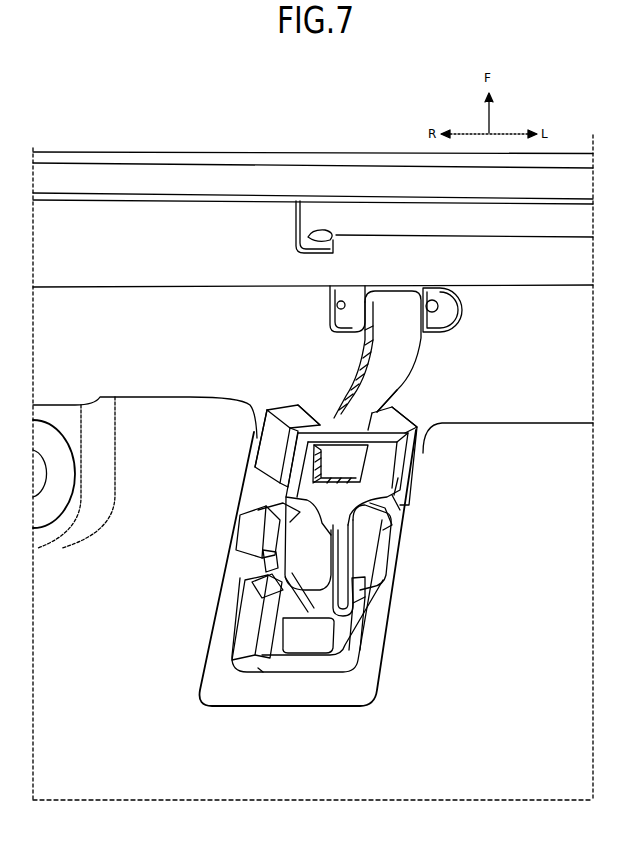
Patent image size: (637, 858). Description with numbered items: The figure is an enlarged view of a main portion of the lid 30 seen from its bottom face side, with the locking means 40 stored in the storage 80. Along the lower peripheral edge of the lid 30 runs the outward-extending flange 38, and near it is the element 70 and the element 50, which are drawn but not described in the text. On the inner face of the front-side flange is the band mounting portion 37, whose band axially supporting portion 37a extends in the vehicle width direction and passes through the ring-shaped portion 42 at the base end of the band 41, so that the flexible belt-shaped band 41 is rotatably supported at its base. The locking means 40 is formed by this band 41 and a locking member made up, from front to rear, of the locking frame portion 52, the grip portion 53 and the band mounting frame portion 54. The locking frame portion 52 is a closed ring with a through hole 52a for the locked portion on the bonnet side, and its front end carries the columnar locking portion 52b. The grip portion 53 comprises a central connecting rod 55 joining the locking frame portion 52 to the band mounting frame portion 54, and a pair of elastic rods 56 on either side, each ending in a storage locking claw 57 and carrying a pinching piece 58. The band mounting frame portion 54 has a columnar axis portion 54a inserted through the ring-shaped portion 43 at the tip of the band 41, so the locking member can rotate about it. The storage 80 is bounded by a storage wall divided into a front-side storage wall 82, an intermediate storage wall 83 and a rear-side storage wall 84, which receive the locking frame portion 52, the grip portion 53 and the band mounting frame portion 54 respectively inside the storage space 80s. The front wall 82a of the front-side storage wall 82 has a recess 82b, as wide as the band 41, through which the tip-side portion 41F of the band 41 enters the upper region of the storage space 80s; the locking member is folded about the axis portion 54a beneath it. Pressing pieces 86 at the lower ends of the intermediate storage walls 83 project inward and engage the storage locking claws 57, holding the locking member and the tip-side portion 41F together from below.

The lid 30 is at (351, 130).
The flange 38 is at (316, 151).
The clip 70 is at (173, 201).
The band mounting portion 37 is at (383, 284).
The band axially supporting portion 37a is at (433, 293).
The ring-shaped portion 42 is at (395, 283).
The band 41 is at (412, 360).
The tip-side portion of the band 41F is at (405, 487).
The locking means 40 is at (438, 389).
The grip portion 53 is at (420, 561).
The latch plate 50 is at (307, 596).
The band mounting frame portion 54 is at (347, 640).
The axis portion 54a is at (292, 672).
The ring-shaped portion 43 is at (312, 648).
The locking frame portion 52 is at (408, 452).
The through hole 52a is at (358, 445).
The locking portion 52b is at (350, 458).
The storage 80 is at (412, 468).
The storage space 80s is at (410, 497).
The front-side storage wall 82 is at (258, 443).
The front wall 82a is at (272, 405).
The recess 82b is at (310, 404).
The intermediate storage wall 83 is at (248, 520).
The pressing piece 86 is at (258, 510).
The storage locking claw 57 is at (263, 555).
The elastic rod 56 is at (268, 580).
The rear-side storage wall 84 is at (240, 612).
The connecting rod 55 is at (352, 547).
The pinching piece 58 is at (342, 572).